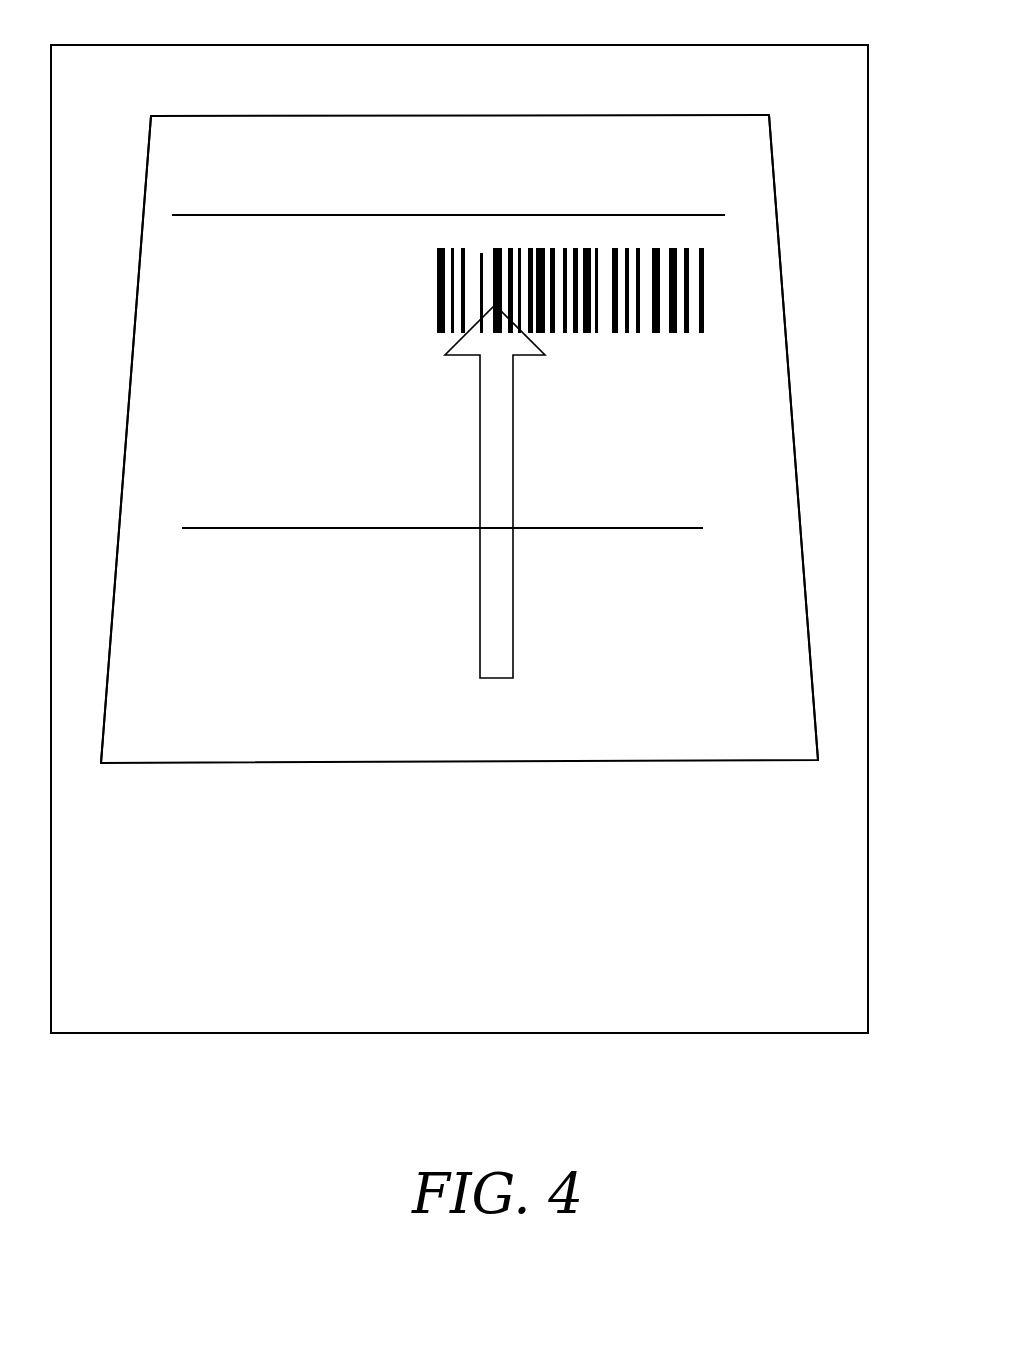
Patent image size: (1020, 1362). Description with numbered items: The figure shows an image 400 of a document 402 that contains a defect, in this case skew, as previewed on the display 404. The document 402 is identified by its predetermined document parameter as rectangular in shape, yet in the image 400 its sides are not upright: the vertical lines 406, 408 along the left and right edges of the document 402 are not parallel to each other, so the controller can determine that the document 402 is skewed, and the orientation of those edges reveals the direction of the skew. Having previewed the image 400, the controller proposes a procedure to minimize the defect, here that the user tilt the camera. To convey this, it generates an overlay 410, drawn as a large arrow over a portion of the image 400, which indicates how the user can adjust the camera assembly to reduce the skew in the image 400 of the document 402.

The image 400 is at (556, 781).
The document 402 is at (483, 184).
The display 404 is at (372, 45).
The vertical line 406 is at (141, 231).
The vertical line 408 is at (778, 232).
The overlay 410 is at (540, 443).